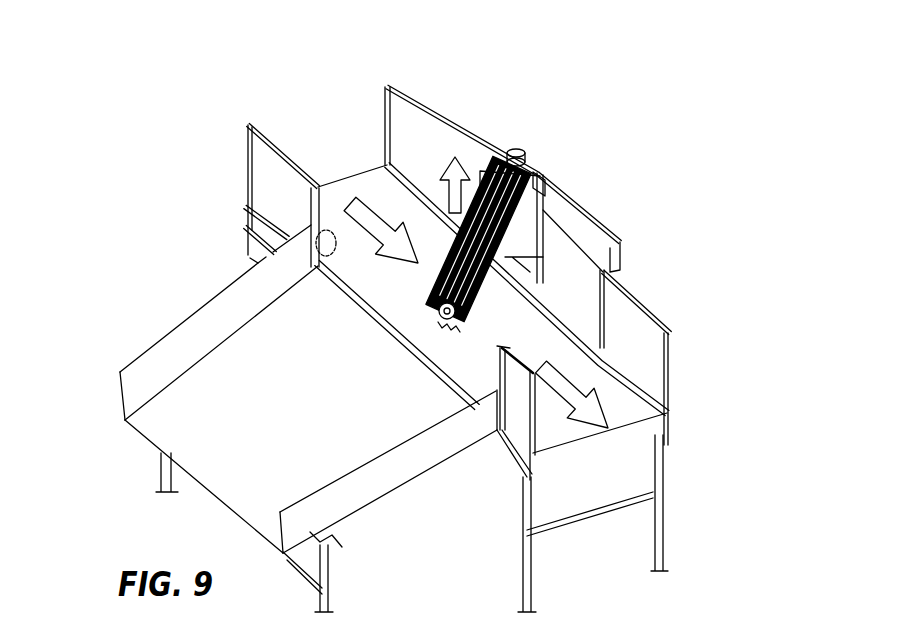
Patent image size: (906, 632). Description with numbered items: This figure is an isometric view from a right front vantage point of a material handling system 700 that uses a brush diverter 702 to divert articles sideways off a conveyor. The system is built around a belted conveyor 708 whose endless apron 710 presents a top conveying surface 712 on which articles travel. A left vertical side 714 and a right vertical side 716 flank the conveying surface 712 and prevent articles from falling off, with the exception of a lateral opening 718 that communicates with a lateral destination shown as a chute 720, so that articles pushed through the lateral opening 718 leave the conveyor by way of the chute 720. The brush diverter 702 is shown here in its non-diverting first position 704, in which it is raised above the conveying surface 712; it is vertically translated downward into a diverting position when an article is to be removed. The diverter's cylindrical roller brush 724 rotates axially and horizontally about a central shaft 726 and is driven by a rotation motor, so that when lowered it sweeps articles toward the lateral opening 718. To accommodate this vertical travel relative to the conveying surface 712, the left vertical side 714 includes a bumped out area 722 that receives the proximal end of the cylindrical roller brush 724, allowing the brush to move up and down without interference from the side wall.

The material handling system 700 is at (672, 99).
The brush diverter 702 is at (600, 270).
The non-diverting first position 704 is at (659, 292).
The belted conveyor 708 is at (373, 193).
The endless apron 710 is at (410, 192).
The top conveying surface 712 is at (352, 200).
The left vertical side 714 is at (673, 363).
The right vertical side 716 is at (247, 147).
The lateral opening 718 is at (314, 262).
The chute 720 is at (213, 433).
The bumped out area 722 is at (467, 190).
The cylindrical roller brush 724 is at (580, 233).
The central shaft 726 is at (438, 312).